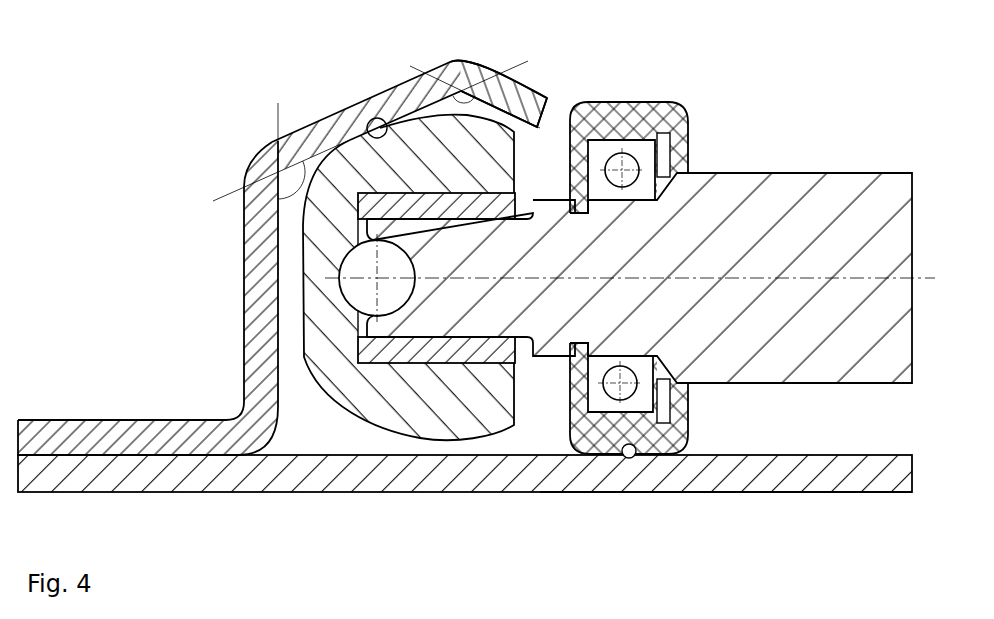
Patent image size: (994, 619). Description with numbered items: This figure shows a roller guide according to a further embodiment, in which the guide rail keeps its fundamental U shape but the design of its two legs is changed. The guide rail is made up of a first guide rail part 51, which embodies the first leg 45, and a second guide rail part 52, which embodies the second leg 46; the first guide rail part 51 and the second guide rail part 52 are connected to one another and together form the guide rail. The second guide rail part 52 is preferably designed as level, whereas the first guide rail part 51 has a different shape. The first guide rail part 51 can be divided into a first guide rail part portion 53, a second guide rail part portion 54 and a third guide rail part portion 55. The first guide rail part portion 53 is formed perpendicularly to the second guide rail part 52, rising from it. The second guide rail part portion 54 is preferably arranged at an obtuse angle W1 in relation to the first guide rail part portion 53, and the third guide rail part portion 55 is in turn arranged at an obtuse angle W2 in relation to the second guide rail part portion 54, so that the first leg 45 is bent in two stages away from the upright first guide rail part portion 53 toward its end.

The first leg 45 is at (348, 106).
The second leg 46 is at (594, 493).
The first guide rail part 51 is at (263, 146).
The second guide rail part 52 is at (396, 493).
The first guide rail part portion 53 is at (247, 266).
The second guide rail part portion 54 is at (402, 82).
The third guide rail part portion 55 is at (533, 90).
The obtuse angle W1 is at (292, 197).
The obtuse angle W2 is at (458, 97).